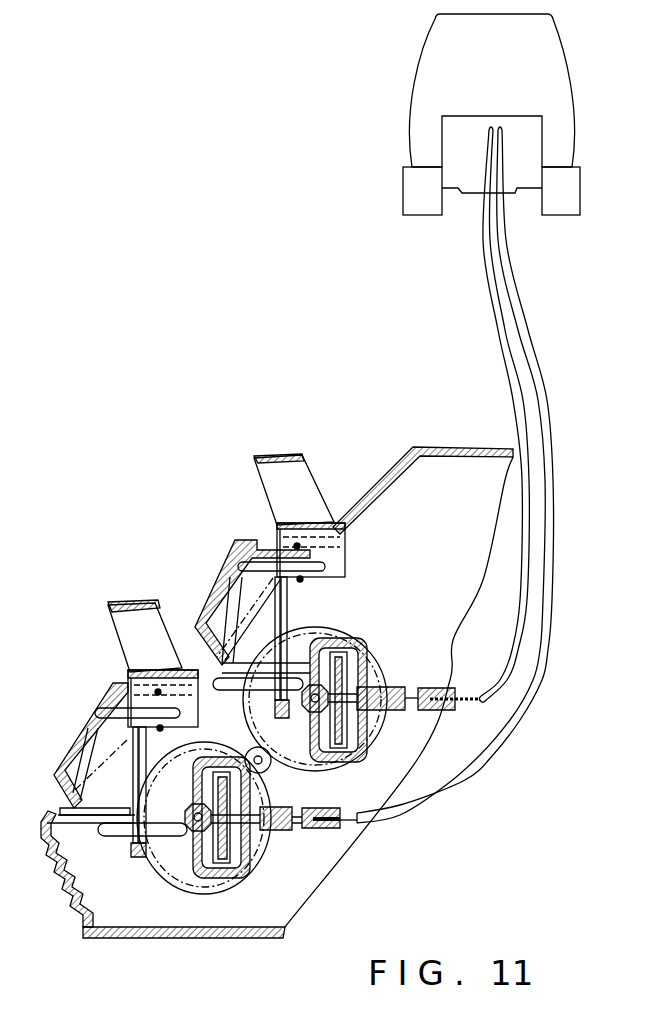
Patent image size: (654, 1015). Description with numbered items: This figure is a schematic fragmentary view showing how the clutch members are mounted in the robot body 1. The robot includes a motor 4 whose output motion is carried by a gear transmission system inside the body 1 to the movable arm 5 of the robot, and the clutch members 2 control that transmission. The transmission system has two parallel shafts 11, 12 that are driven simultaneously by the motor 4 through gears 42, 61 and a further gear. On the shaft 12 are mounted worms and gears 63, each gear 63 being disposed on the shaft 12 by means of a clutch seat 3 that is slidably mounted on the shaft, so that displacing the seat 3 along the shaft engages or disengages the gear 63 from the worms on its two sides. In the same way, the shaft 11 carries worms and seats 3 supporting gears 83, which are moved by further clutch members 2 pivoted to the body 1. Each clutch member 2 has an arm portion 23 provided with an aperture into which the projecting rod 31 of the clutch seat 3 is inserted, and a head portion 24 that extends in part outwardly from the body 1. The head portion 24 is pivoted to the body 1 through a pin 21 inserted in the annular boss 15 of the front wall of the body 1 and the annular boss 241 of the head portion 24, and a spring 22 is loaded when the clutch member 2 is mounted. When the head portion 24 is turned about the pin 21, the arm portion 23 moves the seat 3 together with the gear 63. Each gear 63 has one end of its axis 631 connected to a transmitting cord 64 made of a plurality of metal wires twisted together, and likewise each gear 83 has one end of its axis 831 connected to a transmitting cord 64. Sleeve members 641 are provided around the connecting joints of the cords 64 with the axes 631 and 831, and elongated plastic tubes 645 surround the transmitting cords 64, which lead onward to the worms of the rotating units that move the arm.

The body 1 is at (430, 447).
The clutch member 2 is at (163, 617).
The clutch seat 3 is at (370, 726).
The motor 4 is at (280, 793).
The movable arm 5 is at (416, 105).
The shaft 11 is at (190, 825).
The shaft 12 is at (308, 707).
The annular boss 15 is at (113, 687).
The pin 21 is at (97, 713).
The spring 22 is at (310, 580).
The arm portion 23 is at (127, 787).
The head portion 24 is at (108, 625).
The projecting rod 31 is at (301, 682).
The gear 42 is at (283, 762).
The gear 61 is at (383, 663).
The gear 63 is at (350, 732).
The gear 83 is at (260, 867).
The annular boss 241 is at (133, 677).
The axis 631 is at (412, 688).
The sleeve member 641 is at (450, 710).
The transmitting cord 64 is at (473, 702).
The elongated plastic tube 645 is at (525, 535).
The axis 831 is at (292, 829).